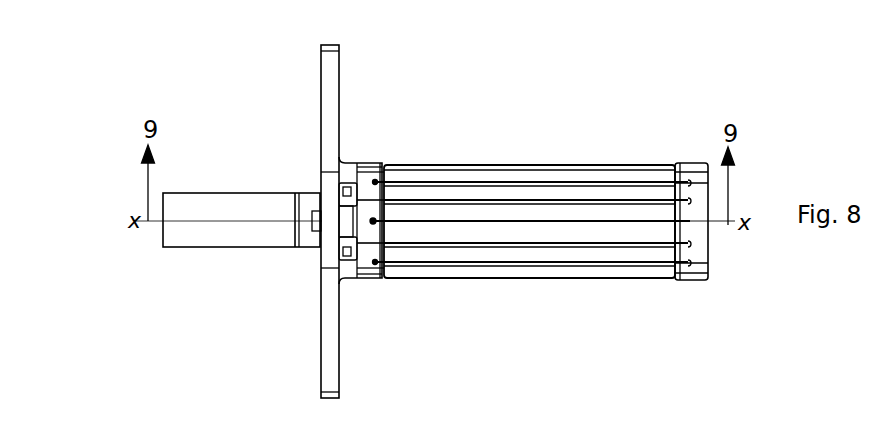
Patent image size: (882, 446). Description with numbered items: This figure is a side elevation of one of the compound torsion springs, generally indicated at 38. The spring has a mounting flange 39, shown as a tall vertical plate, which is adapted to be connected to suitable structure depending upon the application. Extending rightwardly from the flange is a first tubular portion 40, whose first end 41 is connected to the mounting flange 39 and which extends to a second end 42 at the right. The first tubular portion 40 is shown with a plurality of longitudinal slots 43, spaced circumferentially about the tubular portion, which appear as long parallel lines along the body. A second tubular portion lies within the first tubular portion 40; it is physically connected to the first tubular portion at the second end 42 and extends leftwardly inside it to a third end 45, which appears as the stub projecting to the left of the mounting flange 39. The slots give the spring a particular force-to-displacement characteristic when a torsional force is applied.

The compound torsion spring 38 is at (500, 110).
The mounting flange 39 is at (318, 111).
The first tubular portion 40 is at (533, 164).
The first end 41 is at (355, 280).
The second end 42 is at (698, 285).
The longitudinal slot 43 is at (442, 244).
The third end 45 is at (310, 256).